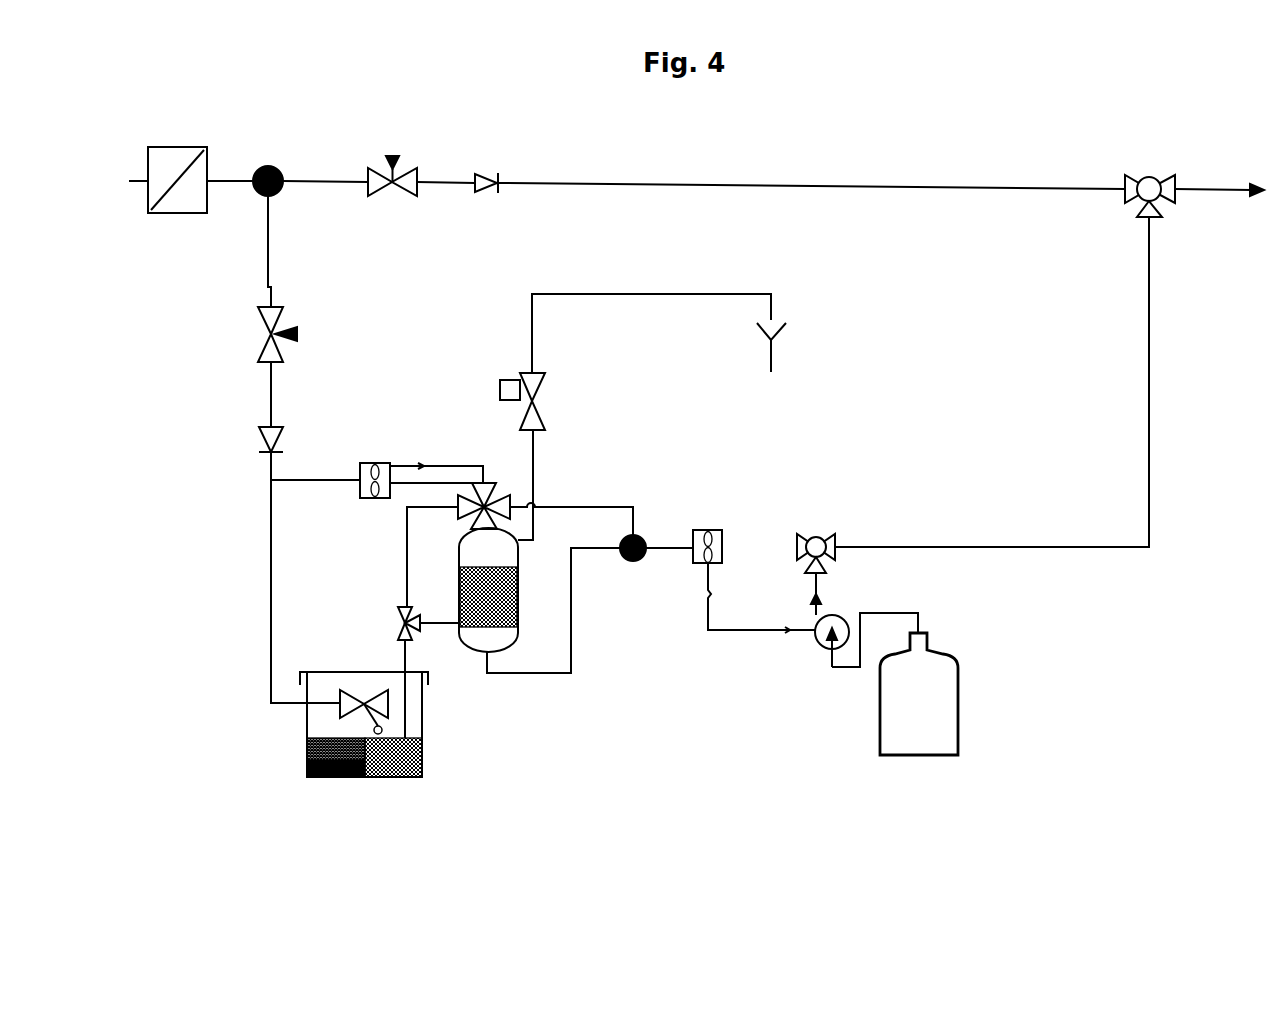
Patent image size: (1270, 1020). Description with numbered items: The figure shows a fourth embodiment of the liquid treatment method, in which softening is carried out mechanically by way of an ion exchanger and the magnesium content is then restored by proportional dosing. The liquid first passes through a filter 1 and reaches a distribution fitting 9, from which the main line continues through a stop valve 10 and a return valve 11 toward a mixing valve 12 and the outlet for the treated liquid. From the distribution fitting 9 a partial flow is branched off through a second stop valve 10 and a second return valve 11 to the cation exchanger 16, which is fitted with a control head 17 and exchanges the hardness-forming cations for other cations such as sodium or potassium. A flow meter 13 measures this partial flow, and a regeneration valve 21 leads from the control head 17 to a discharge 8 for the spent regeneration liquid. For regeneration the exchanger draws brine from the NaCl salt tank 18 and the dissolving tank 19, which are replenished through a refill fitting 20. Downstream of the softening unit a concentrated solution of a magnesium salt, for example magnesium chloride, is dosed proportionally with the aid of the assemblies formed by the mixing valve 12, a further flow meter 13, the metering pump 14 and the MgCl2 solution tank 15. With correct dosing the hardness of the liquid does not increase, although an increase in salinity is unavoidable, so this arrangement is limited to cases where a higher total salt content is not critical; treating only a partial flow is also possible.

The filter 1 is at (178, 143).
The discharge 8 is at (785, 348).
The distribution fitting 9 is at (272, 152).
The stop valve 10 is at (360, 142).
The return valve 11 is at (478, 142).
The mixing valve 12 is at (1140, 148).
The flow meter 13 is at (377, 458).
The metering pump 14 is at (813, 650).
The MgCl2 solution tank 15 is at (972, 685).
The cation exchanger 16 is at (522, 602).
The control head 17 is at (498, 470).
The NaCl salt tank 18 is at (290, 748).
The dissolving tank 19 is at (437, 753).
The refill fitting 20 is at (355, 692).
The regeneration valve 21 is at (558, 400).